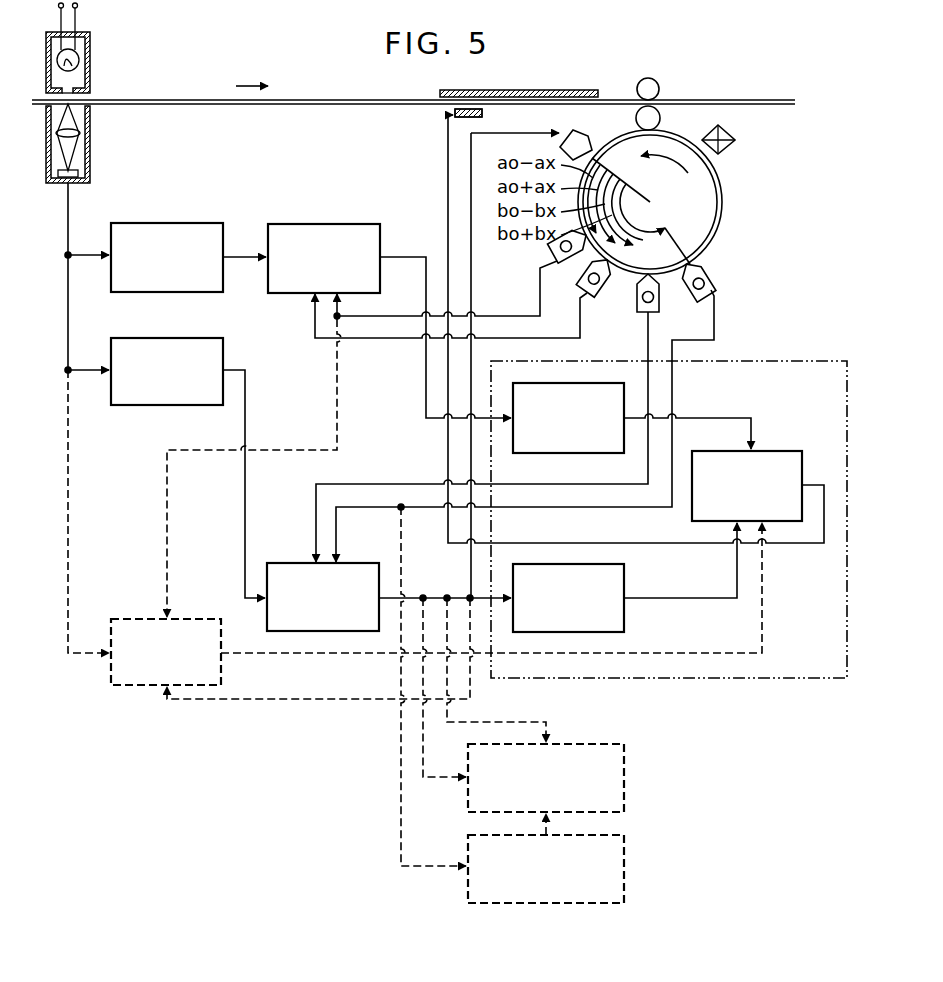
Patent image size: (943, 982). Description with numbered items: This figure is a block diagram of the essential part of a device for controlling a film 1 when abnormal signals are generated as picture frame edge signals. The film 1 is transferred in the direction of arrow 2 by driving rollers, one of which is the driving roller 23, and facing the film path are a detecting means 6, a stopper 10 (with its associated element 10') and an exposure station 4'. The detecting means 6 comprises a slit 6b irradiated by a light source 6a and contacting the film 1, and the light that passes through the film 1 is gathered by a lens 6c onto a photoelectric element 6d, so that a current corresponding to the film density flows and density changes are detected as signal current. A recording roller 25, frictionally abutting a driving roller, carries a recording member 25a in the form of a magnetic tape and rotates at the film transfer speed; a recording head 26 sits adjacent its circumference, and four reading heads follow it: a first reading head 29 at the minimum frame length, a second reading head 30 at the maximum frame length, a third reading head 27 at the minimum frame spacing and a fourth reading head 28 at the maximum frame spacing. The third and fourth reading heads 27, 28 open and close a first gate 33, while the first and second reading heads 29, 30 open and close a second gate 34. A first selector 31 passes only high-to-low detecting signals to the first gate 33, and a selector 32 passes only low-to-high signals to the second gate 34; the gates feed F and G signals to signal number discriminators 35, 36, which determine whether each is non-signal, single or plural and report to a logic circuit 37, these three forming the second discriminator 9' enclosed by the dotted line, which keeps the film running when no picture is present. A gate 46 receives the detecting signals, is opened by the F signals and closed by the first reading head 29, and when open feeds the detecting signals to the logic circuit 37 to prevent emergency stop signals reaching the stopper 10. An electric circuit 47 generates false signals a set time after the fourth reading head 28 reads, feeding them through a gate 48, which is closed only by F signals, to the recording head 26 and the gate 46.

The film 1 is at (188, 99).
The arrow indicating direction of film transfer 2 is at (242, 75).
The exposure station 4' is at (519, 76).
The detecting means 6 is at (86, 93).
The light source 6a is at (80, 60).
The slit 6b is at (73, 89).
The lens 6c is at (80, 130).
The photoelectric element 6d is at (80, 172).
The second discriminator 9' is at (681, 506).
The stopper 10 is at (485, 123).
The pulse pickup reading head 10' is at (504, 119).
The driving roller 23 is at (659, 85).
The recording roller 25 is at (675, 199).
The recording member 25a is at (722, 184).
The recording head 26 is at (583, 134).
The third reading head 27 is at (659, 308).
The fourth reading head 28 is at (713, 287).
The first reading head 29 is at (568, 264).
The second reading head 30 is at (595, 293).
The first selector 31 is at (223, 349).
The selector 32 is at (223, 234).
The first gate 33 is at (379, 573).
The second gate 34 is at (380, 234).
The signal number discriminator 35 is at (624, 573).
The signal number discriminator 36 is at (623, 393).
The logic circuit 37 is at (802, 461).
The gate 46 is at (221, 631).
The electric circuit 47 is at (624, 844).
The gate 48 is at (624, 754).